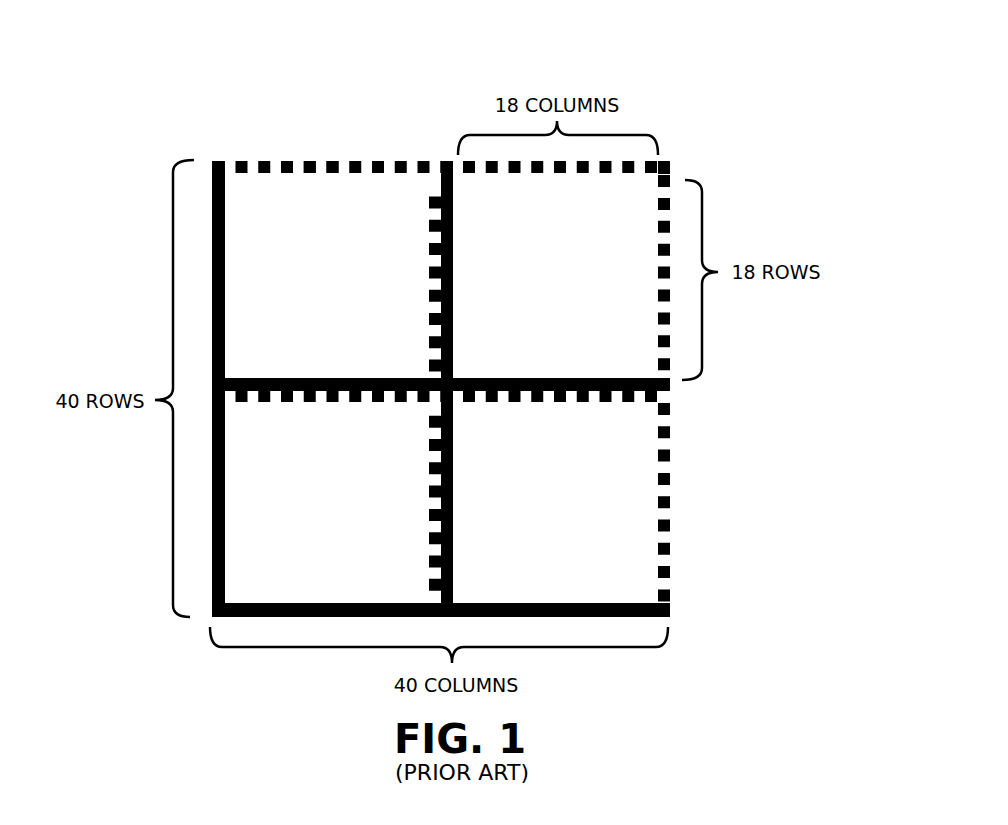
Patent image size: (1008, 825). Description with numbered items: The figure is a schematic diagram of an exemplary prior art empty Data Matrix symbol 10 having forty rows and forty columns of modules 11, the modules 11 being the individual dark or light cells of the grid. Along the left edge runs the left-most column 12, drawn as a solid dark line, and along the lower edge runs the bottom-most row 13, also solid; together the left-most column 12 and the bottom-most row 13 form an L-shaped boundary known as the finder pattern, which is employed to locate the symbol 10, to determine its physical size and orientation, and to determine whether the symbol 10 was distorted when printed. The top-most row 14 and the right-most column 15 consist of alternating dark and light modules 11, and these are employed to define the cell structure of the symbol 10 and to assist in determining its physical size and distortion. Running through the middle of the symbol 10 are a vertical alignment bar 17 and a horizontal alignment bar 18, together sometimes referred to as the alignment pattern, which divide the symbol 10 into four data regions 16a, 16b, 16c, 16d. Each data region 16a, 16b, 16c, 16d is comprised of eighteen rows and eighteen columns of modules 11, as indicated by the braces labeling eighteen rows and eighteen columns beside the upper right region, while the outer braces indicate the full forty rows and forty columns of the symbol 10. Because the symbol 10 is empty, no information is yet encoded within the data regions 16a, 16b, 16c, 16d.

The Data Matrix symbol 10 is at (497, 341).
The modules 11 is at (343, 161).
The left-most column 12 is at (218, 134).
The bottom-most row 13 is at (689, 611).
The top-most row 14 is at (688, 168).
The right-most column 15 is at (668, 134).
The data region 16a is at (307, 286).
The data region 16b is at (577, 286).
The data region 16c is at (532, 516).
The data region 16d is at (295, 516).
The vertical alignment bar 17 is at (445, 134).
The horizontal alignment bar 18 is at (690, 389).